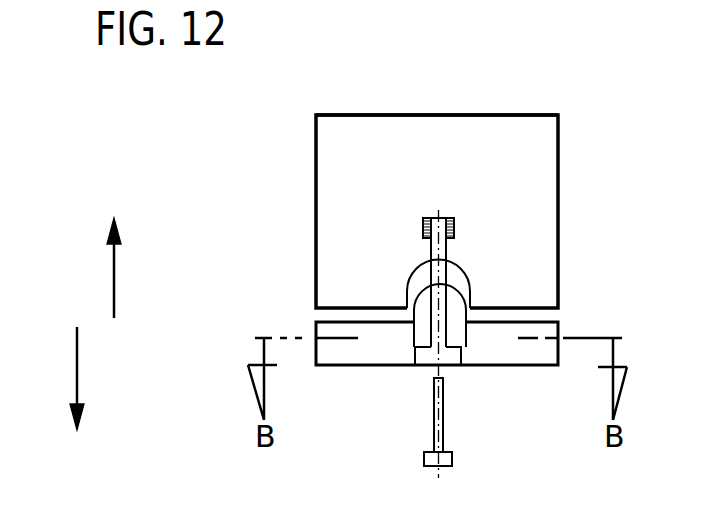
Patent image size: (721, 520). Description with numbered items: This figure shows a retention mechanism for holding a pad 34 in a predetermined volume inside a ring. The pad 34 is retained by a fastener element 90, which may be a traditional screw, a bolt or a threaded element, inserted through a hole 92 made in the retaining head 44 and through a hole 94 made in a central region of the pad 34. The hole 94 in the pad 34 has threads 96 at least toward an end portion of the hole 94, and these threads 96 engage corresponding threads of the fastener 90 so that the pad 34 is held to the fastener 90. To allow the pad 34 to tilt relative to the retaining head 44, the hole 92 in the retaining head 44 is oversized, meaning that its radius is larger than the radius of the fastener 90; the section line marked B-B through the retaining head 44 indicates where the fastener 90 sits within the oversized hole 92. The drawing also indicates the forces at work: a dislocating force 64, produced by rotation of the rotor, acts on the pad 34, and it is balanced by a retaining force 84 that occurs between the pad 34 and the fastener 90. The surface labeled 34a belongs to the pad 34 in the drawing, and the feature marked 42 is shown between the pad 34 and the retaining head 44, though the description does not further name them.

The pad 34 is at (524, 198).
The top surface of block 34a is at (501, 114).
The grommet 42 is at (465, 278).
The retaining head 44 is at (418, 319).
The dislocating force 64 is at (115, 281).
The retaining force 84 is at (75, 377).
The fastener element 90 is at (444, 428).
The hole 92 is at (446, 333).
The hole 94 is at (430, 240).
The threads 96 is at (423, 228).